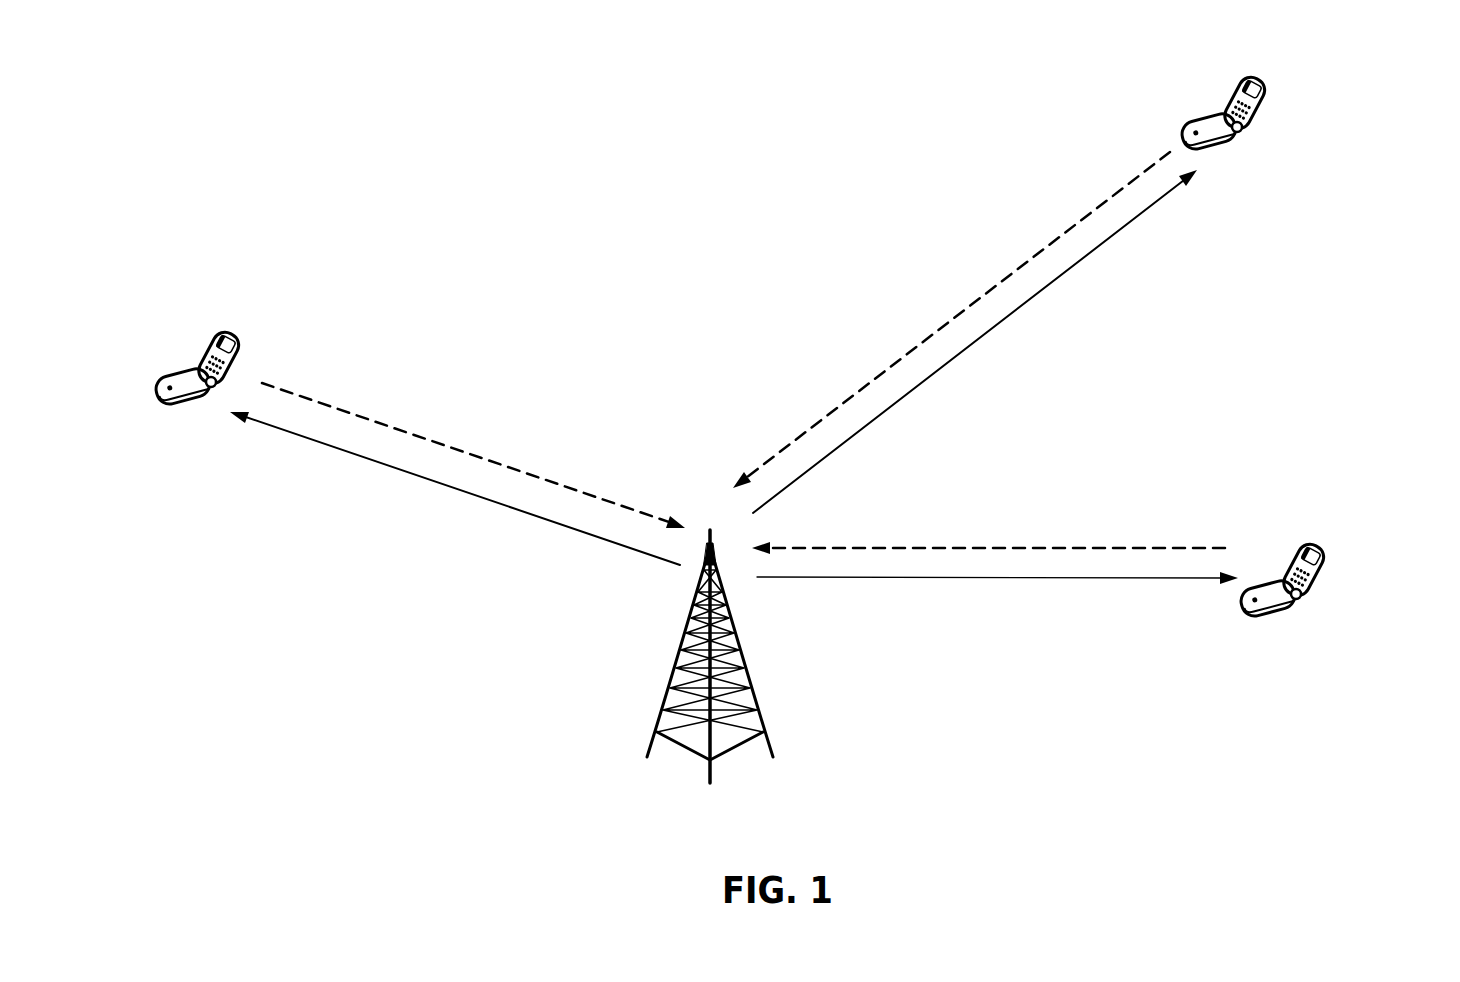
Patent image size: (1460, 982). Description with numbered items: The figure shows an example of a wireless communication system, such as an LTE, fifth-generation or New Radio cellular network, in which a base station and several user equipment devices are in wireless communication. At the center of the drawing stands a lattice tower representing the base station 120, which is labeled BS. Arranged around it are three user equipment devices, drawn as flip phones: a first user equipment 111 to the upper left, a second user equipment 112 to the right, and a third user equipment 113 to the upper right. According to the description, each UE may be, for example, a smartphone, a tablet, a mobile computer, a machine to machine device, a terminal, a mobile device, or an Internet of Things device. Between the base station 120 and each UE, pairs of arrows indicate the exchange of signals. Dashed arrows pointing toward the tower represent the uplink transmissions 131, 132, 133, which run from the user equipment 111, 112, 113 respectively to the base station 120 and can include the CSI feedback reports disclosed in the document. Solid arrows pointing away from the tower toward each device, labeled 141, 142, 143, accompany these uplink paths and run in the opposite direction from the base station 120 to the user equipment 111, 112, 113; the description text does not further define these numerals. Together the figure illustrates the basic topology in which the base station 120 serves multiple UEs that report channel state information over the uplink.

The user equipment 111 is at (175, 338).
The user equipment 112 is at (1327, 582).
The user equipment 113 is at (1272, 115).
The base station 120 is at (788, 763).
The uplink transmission 131 is at (500, 447).
The uplink transmission 132 is at (1007, 533).
The uplink transmission 133 is at (957, 308).
The downlink signal to terminal 111 141 is at (472, 493).
The downlink signal to terminal 112 142 is at (1085, 580).
The downlink signal to terminal 113 143 is at (1100, 245).